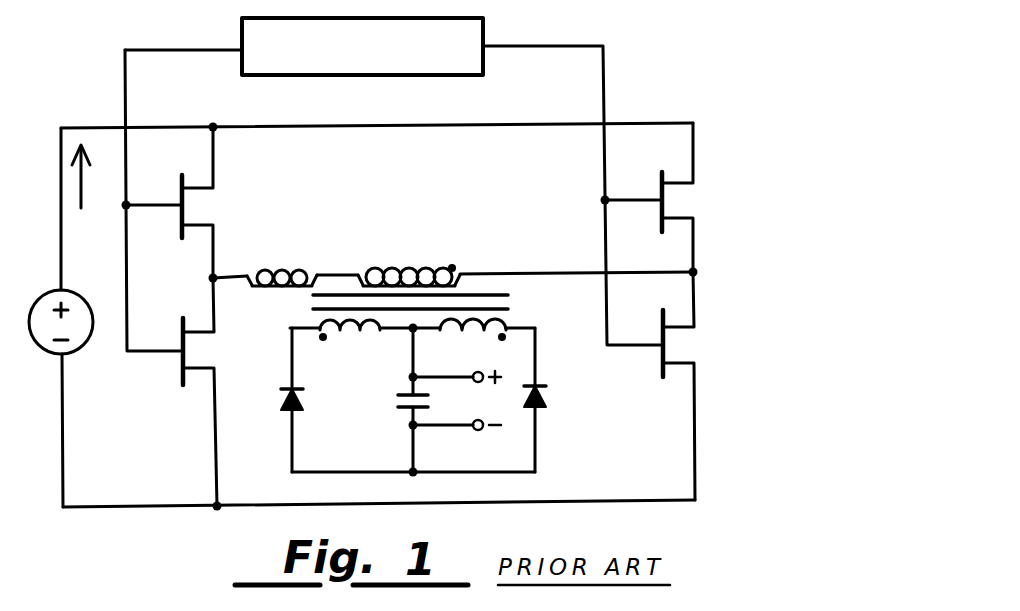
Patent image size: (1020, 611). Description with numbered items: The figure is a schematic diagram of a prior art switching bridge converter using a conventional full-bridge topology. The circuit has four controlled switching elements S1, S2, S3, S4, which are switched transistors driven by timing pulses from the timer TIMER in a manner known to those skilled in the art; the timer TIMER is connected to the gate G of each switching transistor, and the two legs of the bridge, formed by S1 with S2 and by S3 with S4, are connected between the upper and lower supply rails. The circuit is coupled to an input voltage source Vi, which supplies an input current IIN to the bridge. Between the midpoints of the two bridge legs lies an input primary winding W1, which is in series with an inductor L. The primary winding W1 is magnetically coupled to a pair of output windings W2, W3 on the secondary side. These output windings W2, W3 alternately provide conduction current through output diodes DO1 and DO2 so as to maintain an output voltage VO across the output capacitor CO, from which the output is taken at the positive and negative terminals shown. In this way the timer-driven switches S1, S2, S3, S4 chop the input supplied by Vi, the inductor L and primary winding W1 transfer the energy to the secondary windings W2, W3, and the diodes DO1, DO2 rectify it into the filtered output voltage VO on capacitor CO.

The timer TIMER is at (393, 184).
The input voltage source Vi is at (53, 317).
The input current IIN is at (83, 191).
The gate G is at (167, 204).
The controlled switching element S1 is at (208, 202).
The controlled switching element S2 is at (211, 392).
The controlled switching element S3 is at (690, 197).
The controlled switching element S4 is at (691, 386).
The inductor L is at (265, 265).
The input primary winding W1 is at (503, 274).
The output winding W2 is at (351, 341).
The output winding W3 is at (474, 340).
The output diode DO1 is at (311, 400).
The output diode DO2 is at (554, 400).
The output capacitor CO is at (397, 400).
The output voltage VO is at (455, 400).